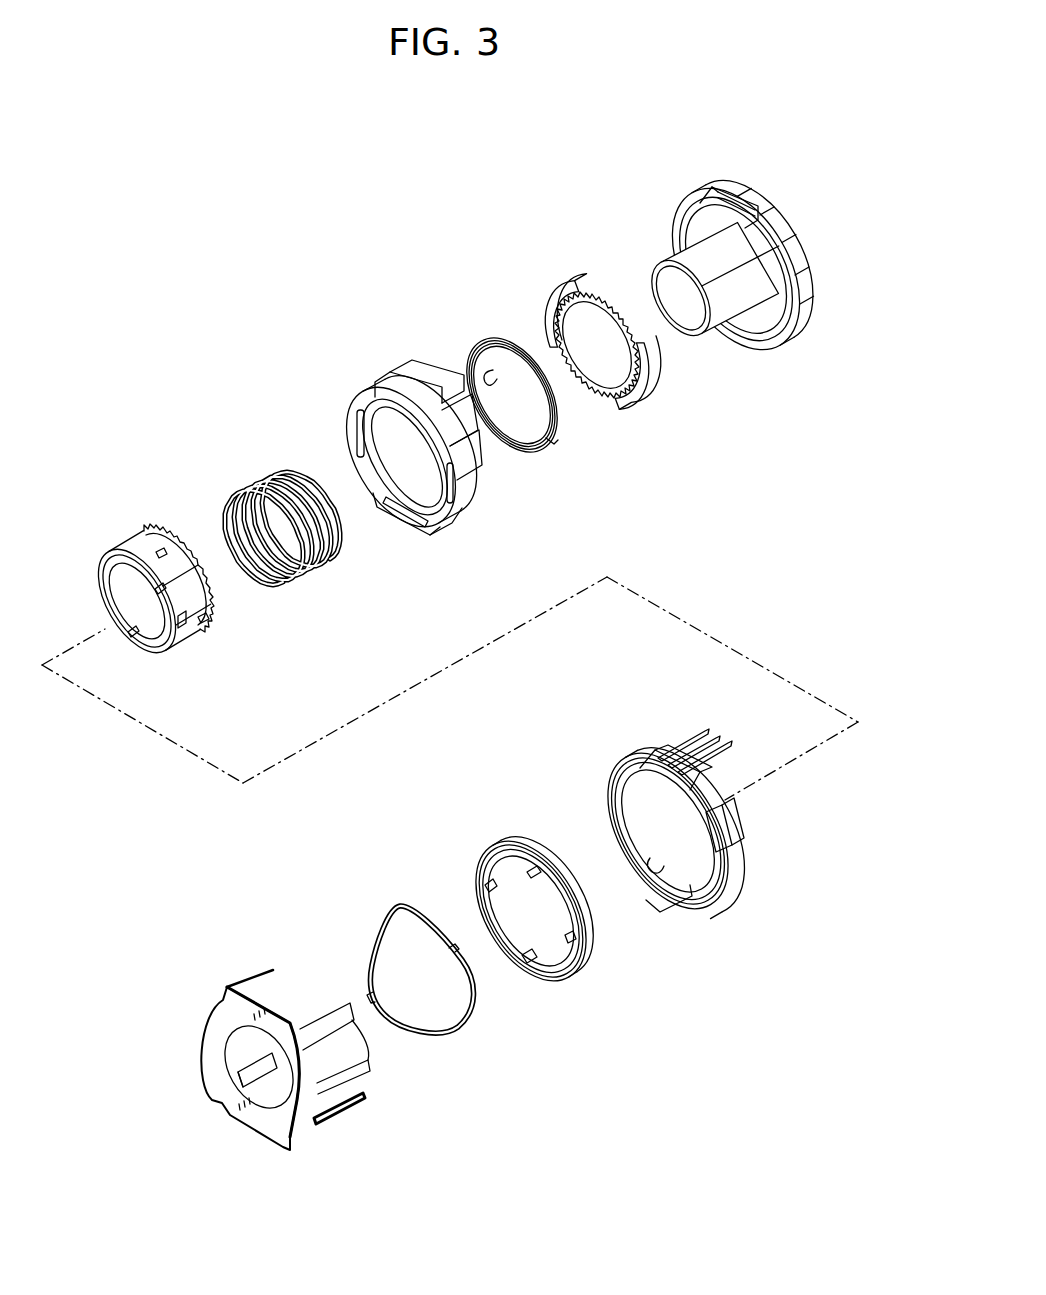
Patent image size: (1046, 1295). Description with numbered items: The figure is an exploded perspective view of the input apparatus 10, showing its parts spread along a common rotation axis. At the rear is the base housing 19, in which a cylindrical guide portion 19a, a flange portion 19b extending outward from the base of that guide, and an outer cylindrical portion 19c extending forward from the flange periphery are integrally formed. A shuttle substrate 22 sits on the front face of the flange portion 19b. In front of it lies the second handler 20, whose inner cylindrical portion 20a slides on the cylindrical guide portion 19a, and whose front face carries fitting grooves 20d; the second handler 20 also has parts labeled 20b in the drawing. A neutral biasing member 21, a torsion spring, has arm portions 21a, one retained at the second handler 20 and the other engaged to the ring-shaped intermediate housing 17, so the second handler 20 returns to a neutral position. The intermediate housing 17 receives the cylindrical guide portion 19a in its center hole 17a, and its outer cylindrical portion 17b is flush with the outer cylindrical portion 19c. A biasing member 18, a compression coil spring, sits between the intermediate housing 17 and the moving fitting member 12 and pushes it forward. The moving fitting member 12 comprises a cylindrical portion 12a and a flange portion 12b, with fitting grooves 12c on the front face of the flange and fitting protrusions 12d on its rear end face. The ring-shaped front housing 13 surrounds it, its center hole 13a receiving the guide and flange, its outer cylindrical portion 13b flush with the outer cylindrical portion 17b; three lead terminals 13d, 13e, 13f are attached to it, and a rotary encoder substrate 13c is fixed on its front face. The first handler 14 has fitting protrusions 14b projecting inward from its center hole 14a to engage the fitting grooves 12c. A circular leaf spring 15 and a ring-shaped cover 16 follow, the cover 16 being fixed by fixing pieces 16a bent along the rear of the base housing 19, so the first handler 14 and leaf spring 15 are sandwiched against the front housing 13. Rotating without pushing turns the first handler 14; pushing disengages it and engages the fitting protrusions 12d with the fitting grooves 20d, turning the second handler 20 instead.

The input apparatus 10 is at (282, 253).
The moving fitting member 12 is at (177, 584).
The cylindrical portion 12a is at (180, 632).
The flange portion 12b is at (192, 568).
The fitting grooves 12c is at (165, 550).
The fitting protrusions 12d is at (212, 596).
The front housing 13 is at (673, 836).
The center hole 13a is at (652, 858).
The outer cylindrical portion 13b is at (738, 830).
The substrate 13c is at (613, 818).
The lead terminal 13d is at (676, 743).
The lead terminal 13e is at (721, 738).
The lead terminal 13f is at (731, 757).
The first handler 14 is at (536, 946).
The center hole 14a is at (493, 865).
The fitting protrusions 14b is at (540, 878).
The leaf spring 15 is at (453, 1048).
The cover 16 is at (285, 1085).
The fixing pieces 16a is at (345, 1082).
The intermediate housing 17 is at (405, 429).
The center hole 17a is at (372, 442).
The outer cylindrical portion 17b is at (447, 496).
The biasing member 18 is at (250, 465).
The base housing 19 is at (739, 253).
The cylindrical guide portion 19a is at (742, 318).
The flange portion 19b is at (700, 228).
The outer cylindrical portion 19c is at (800, 280).
The second handler 20 is at (589, 327).
The cylindrical portion 20a is at (600, 392).
The clip 20b is at (556, 322).
The fitting grooves 20d is at (598, 308).
The neutral biasing member 21 is at (510, 382).
The arm portions 21a is at (490, 377).
The shuttle substrate 22 is at (775, 318).